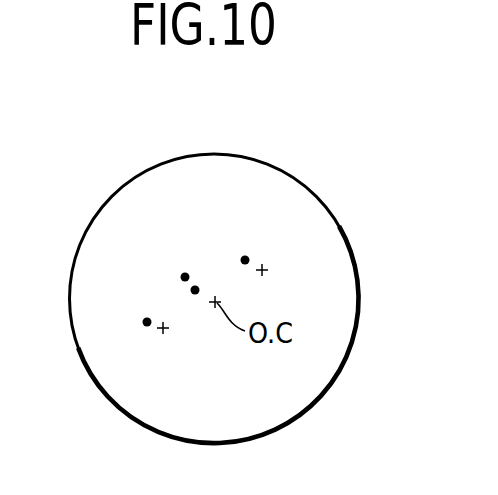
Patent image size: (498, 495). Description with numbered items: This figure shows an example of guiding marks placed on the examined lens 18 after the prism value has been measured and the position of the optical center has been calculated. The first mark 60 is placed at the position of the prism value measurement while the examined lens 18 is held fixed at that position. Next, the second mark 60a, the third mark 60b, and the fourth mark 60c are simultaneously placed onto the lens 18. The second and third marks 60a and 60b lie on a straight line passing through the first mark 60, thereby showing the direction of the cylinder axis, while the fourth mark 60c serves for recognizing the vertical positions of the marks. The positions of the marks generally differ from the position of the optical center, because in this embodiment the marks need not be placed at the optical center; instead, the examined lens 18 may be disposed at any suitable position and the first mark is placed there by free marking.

The examined lens 18 is at (317, 192).
The first mark 60 is at (197, 288).
The second mark 60a is at (146, 321).
The third mark 60b is at (246, 259).
The fourth mark 60c is at (184, 276).